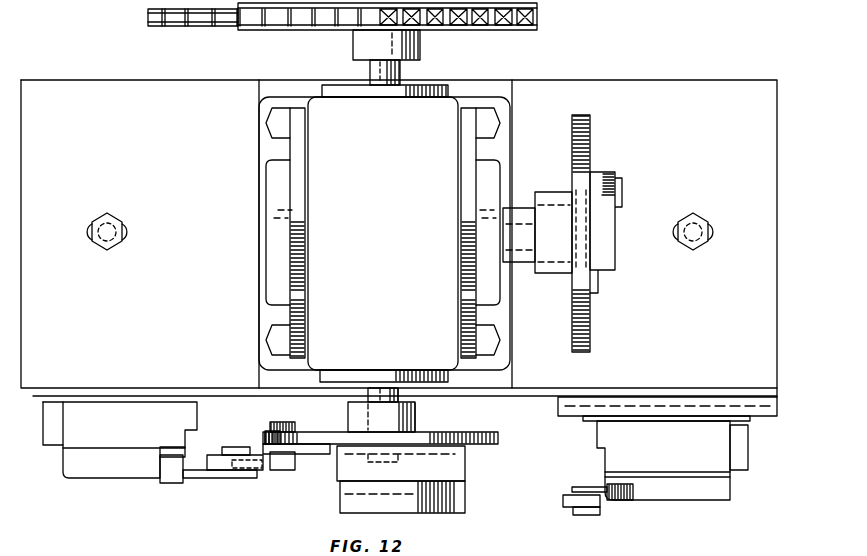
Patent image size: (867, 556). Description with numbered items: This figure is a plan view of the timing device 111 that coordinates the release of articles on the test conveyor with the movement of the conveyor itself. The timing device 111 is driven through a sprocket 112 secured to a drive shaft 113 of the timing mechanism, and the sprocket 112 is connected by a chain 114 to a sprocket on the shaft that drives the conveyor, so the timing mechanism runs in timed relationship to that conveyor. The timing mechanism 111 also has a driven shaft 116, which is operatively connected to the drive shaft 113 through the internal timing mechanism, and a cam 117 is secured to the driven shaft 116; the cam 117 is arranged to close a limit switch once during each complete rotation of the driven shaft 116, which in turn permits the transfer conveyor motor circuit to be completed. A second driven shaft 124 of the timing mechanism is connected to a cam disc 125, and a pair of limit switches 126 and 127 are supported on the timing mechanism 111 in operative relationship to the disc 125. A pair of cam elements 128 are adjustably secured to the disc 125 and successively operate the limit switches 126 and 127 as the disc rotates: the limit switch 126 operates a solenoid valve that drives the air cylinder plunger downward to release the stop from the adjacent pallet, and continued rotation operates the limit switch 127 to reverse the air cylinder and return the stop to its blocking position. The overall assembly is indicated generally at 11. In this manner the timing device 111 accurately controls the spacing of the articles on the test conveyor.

The drive assembly frame 11 is at (547, 76).
The timing device 111 is at (399, 247).
The sprocket 112 is at (440, 33).
The drive shaft 113 is at (383, 72).
The chain 114 is at (538, 12).
The driven shaft 116 is at (516, 214).
The cam 117 is at (592, 333).
The second driven shaft 124 is at (399, 392).
The cam disc 125 is at (499, 440).
The limit switch 126 is at (140, 468).
The limit switch 127 is at (668, 490).
The cam elements 128 is at (243, 455).